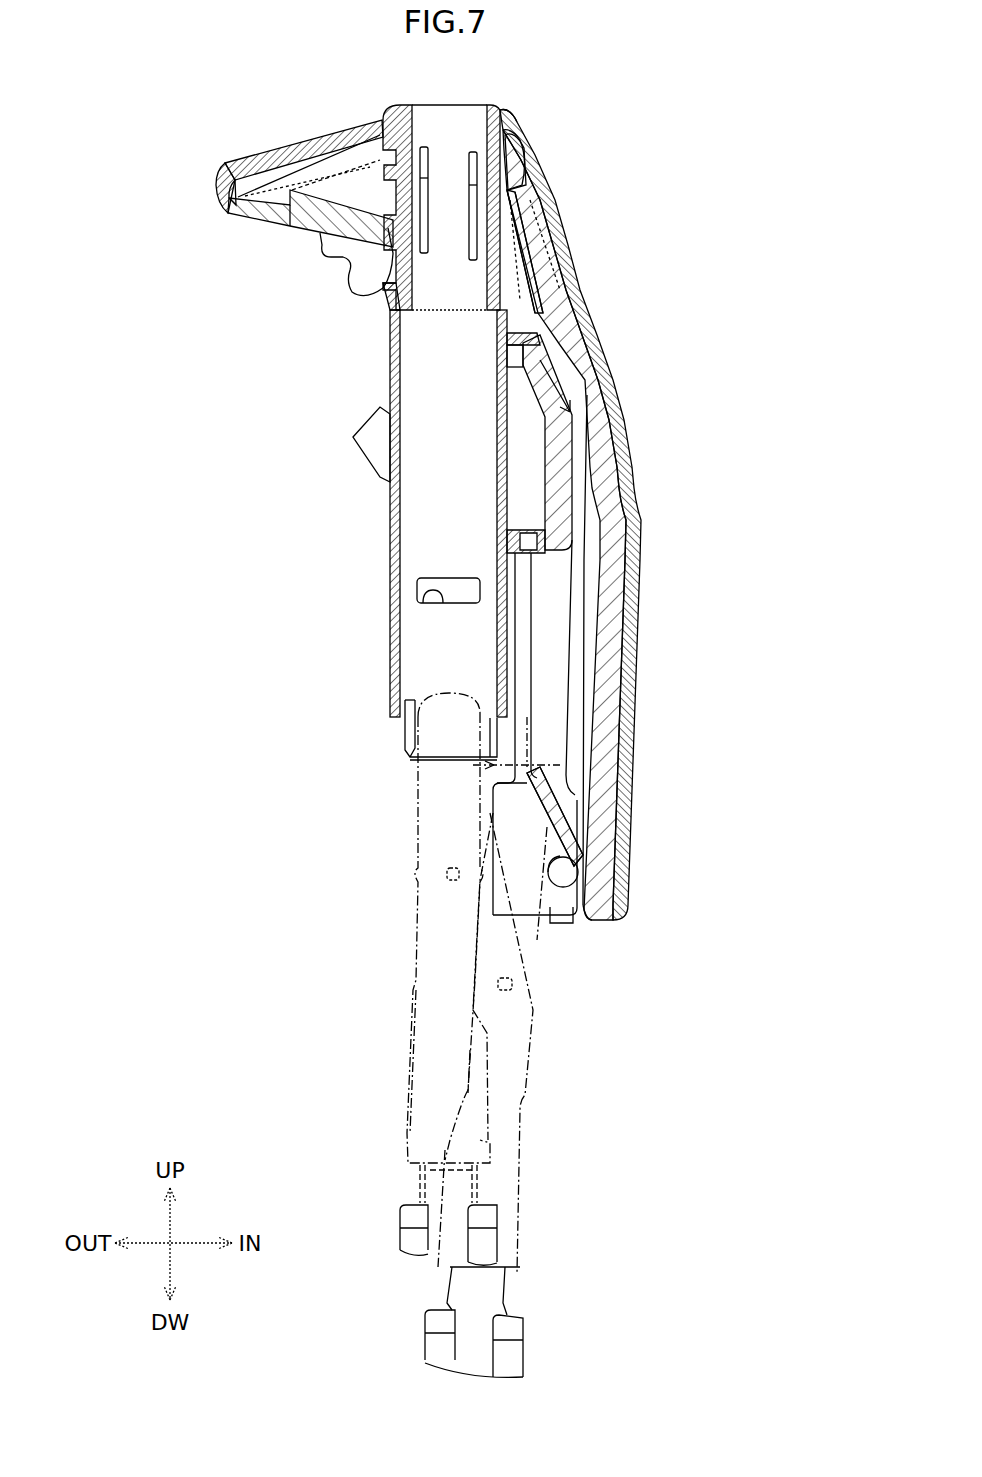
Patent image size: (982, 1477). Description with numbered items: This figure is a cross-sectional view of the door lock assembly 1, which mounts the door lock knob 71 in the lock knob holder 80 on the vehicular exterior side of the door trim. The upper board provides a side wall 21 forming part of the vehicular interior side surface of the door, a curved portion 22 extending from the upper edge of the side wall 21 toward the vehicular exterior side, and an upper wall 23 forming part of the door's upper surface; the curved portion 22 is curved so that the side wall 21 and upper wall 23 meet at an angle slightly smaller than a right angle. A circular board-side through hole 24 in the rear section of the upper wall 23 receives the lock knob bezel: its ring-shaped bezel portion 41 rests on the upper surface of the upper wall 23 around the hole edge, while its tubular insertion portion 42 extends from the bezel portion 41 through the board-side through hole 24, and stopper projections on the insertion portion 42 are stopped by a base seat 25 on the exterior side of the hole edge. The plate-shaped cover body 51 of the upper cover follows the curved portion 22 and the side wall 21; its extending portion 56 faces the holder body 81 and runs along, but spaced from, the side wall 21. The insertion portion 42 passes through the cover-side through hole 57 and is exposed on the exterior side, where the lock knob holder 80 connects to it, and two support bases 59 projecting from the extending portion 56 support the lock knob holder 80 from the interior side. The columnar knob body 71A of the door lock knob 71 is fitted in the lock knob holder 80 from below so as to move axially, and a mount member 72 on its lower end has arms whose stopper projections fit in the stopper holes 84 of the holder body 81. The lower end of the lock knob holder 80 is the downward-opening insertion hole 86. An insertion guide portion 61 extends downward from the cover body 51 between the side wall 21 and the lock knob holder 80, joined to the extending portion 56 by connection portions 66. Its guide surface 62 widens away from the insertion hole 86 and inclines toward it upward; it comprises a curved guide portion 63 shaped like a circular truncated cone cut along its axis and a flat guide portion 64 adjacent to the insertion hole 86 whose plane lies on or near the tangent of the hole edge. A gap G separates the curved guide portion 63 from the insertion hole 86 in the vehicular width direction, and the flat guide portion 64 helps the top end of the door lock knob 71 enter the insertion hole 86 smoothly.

The door lock assembly 1 is at (748, 112).
The side wall 21 is at (587, 490).
The curved portion 22 is at (513, 143).
The upper wall 23 is at (304, 192).
The board-side through hole 24 is at (407, 147).
The base seat 25 is at (512, 170).
The bezel portion 41 is at (507, 117).
The insertion portion 42 is at (497, 250).
The cover body 51 is at (290, 224).
The extending portion 56 is at (560, 490).
The cover-side through hole 57 is at (357, 293).
The support bases 59 is at (527, 318).
The insertion guide portion 61 is at (560, 912).
The guide surface 62 is at (636, 841).
The curved guide portion 63 is at (577, 887).
The flat guide portion 64 is at (530, 813).
The connection portions 66 is at (555, 742).
The door lock knob 71 is at (403, 933).
The knob body 71A is at (435, 1045).
The mount member 72 is at (412, 1222).
The lock knob holder 80 is at (357, 531).
The holder body 81 is at (393, 506).
The stopper holes 84 is at (425, 597).
The insertion hole 86 is at (397, 720).
The gap G is at (507, 770).